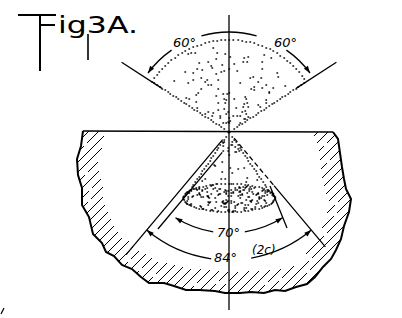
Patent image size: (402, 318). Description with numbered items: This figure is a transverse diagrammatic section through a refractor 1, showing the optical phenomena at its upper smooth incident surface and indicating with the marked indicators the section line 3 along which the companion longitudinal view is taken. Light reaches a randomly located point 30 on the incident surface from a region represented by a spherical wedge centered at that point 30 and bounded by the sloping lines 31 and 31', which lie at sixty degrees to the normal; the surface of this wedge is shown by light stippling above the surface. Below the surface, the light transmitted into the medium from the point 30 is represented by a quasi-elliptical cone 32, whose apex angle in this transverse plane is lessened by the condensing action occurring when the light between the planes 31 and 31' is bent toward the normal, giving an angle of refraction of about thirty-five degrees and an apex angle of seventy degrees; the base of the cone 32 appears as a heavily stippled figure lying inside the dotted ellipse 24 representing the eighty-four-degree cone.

The workpiece 1 is at (313, 112).
The section line 3 is at (253, 22).
The cavity wall 24 is at (292, 212).
The randomly located point 30 is at (231, 133).
The sloping line 31 is at (309, 81).
The sloping line 31' is at (160, 90).
The quasi-elliptical cone 32 is at (214, 158).